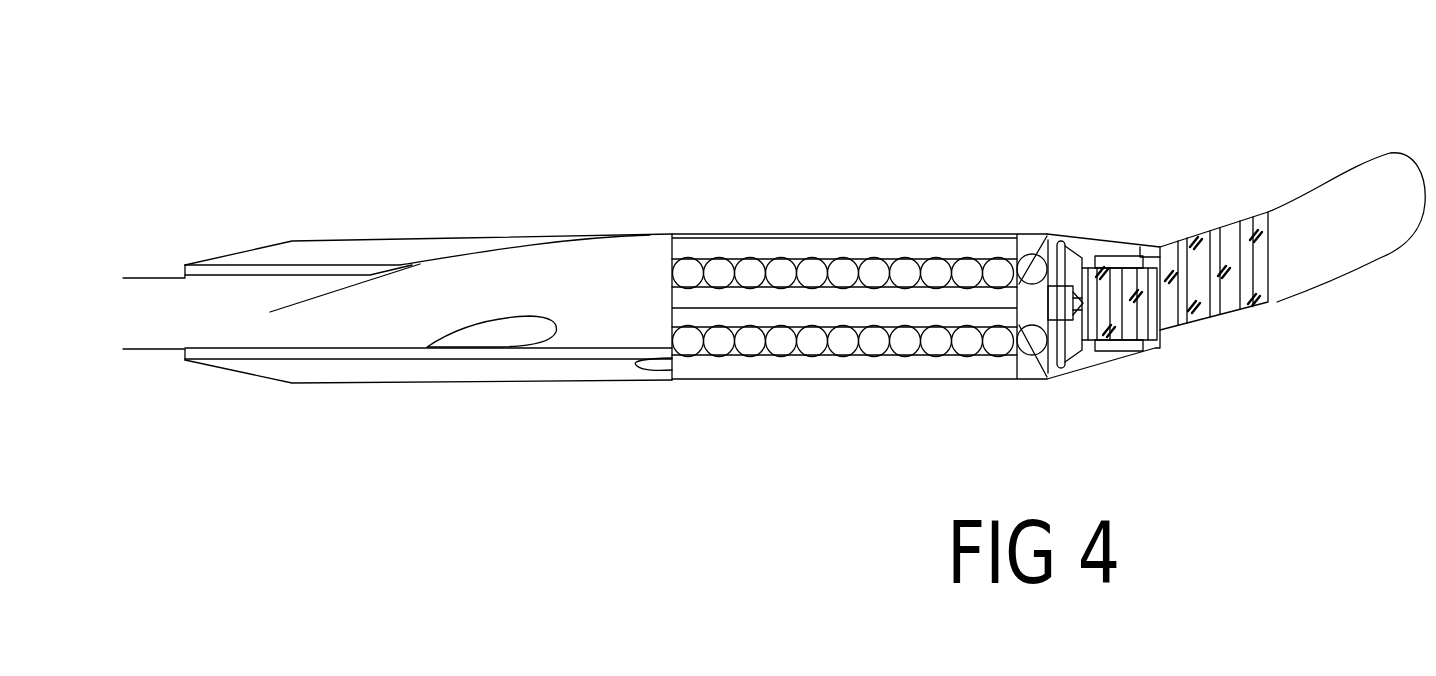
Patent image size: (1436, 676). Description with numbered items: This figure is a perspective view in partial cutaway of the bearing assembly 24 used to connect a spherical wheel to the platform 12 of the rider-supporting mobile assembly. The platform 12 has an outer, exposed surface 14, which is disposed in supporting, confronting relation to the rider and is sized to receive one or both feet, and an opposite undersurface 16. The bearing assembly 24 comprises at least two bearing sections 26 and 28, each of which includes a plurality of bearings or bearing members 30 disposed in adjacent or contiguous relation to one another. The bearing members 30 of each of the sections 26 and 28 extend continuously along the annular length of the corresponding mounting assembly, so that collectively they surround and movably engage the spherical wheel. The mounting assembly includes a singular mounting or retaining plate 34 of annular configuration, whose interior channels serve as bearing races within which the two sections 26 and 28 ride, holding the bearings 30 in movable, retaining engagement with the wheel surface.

The platform 12 is at (572, 209).
The outer, exposed surface 14 is at (447, 238).
The undersurface 16 is at (495, 382).
The bearing assembly 24 is at (853, 223).
The bearing section 26 is at (899, 251).
The bearing section 28 is at (942, 363).
The bearing members 30 is at (702, 259).
The mounting or retaining plate 34 is at (1042, 232).